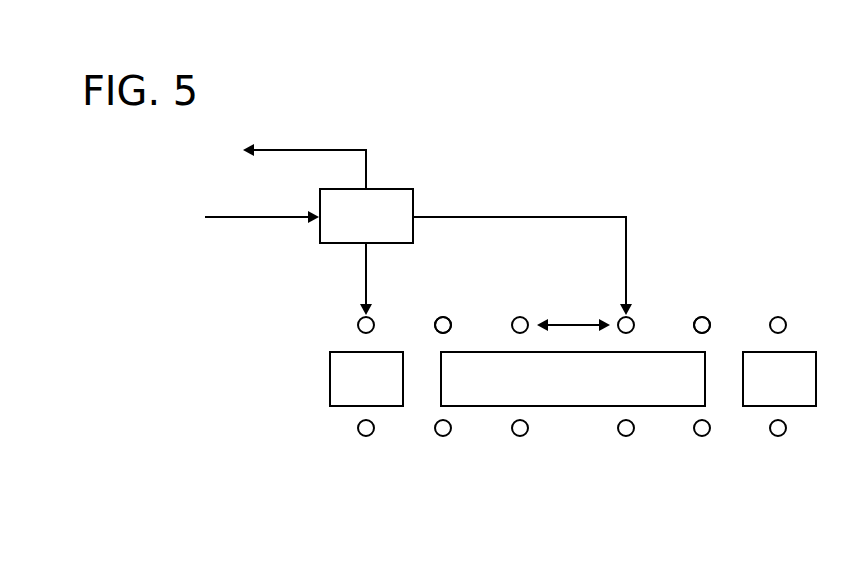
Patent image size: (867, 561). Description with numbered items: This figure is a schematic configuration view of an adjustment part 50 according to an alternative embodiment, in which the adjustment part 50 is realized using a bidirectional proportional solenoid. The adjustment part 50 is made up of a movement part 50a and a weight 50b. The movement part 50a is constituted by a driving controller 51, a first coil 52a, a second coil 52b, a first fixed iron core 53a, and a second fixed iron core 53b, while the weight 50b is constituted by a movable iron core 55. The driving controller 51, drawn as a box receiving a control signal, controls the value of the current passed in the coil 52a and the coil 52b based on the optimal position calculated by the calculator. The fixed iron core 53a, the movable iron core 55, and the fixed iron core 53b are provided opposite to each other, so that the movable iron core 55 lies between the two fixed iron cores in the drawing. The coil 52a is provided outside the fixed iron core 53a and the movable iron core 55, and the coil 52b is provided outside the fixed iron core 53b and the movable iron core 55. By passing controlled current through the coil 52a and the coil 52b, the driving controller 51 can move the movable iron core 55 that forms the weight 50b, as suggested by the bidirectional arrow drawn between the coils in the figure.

The adjustment part 50 is at (315, 122).
The movement part 50a is at (712, 134).
The weight 50b is at (573, 379).
The driving controller 51 is at (403, 200).
The coil 52a is at (443, 317).
The coil 52b is at (702, 317).
The fixed iron core 53a is at (387, 367).
The fixed iron core 53b is at (758, 363).
The movable iron core 55 is at (563, 380).